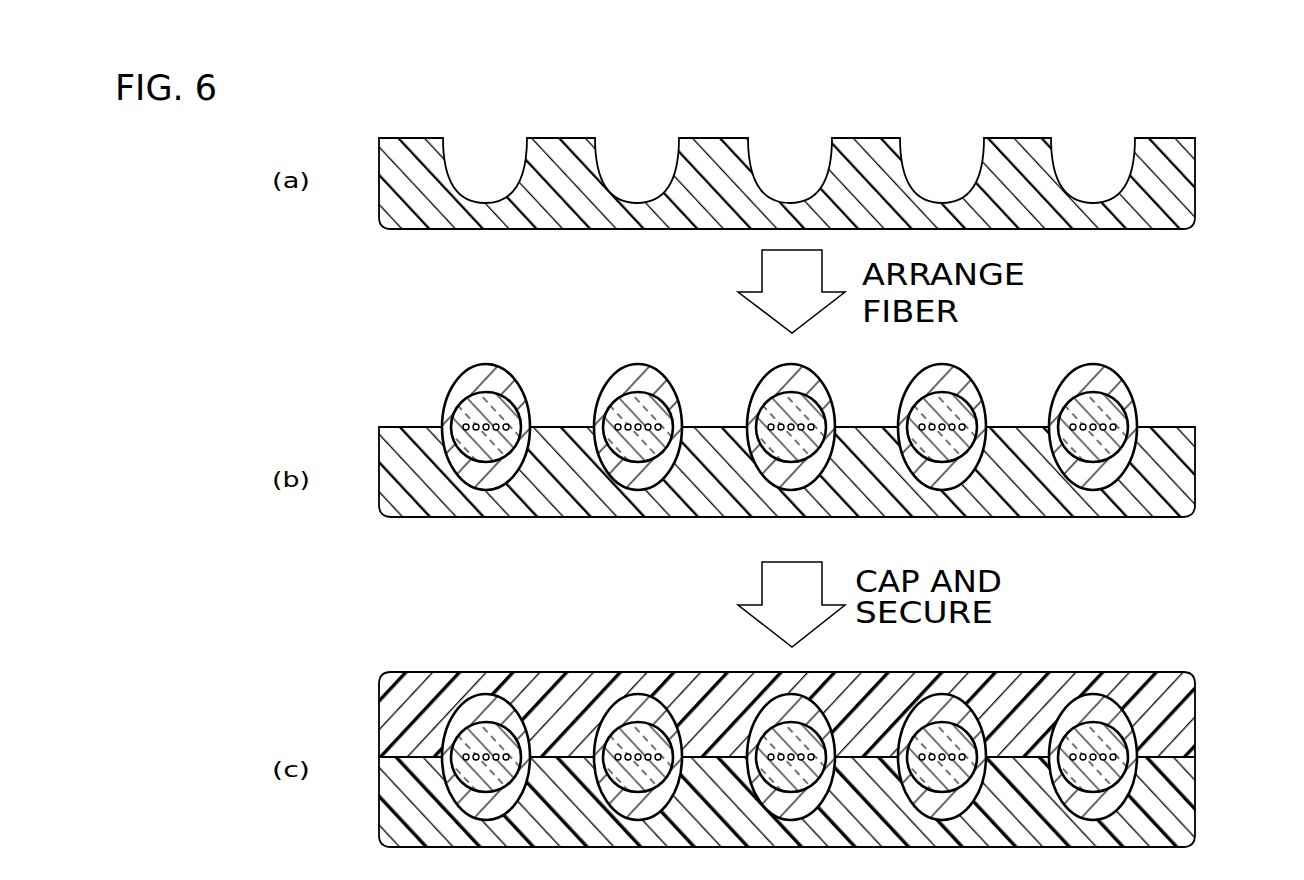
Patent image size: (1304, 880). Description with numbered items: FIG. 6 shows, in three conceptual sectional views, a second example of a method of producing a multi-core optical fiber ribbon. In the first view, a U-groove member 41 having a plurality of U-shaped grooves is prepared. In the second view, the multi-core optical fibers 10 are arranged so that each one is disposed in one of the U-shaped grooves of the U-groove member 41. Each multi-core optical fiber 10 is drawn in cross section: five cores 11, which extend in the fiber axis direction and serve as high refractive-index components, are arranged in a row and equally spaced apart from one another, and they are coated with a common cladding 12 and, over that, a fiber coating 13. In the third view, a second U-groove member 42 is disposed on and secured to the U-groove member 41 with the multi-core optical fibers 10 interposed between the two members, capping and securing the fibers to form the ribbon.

The multi-core optical fiber 10 is at (829, 542).
The core 11 is at (1102, 423).
The cladding 12 is at (1090, 412).
The fiber coating 13 is at (1068, 383).
The U-groove member 41 is at (1168, 178).
The U-groove member 42 is at (1172, 718).